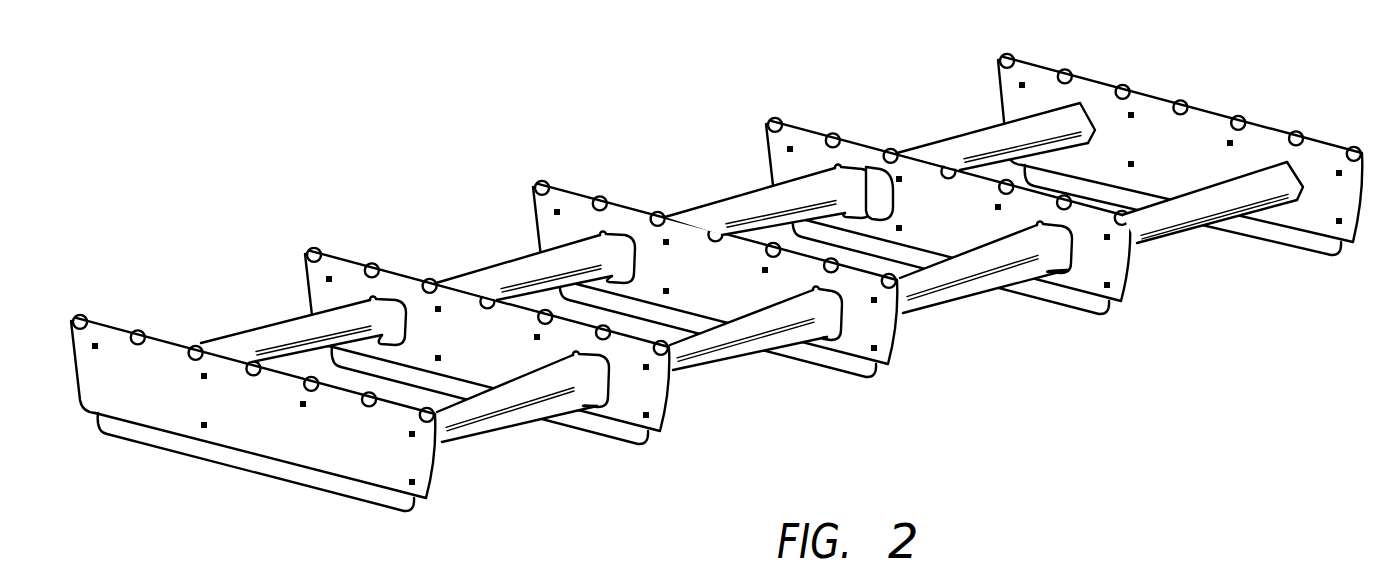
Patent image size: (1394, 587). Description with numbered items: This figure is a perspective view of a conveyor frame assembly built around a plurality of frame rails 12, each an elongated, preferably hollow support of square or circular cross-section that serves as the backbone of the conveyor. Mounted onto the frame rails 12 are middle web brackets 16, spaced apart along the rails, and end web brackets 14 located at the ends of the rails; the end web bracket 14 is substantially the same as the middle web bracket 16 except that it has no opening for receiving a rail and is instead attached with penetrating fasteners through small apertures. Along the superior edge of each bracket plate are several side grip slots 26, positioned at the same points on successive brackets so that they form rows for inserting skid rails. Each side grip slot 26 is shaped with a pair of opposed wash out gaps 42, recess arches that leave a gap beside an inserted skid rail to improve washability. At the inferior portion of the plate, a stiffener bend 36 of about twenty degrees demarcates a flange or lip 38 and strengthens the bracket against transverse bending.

The frame rail 12 is at (511, 426).
The end web bracket 14 is at (1333, 252).
The middle web bracket 16 is at (1124, 302).
The side grip slot 26 is at (662, 218).
The stiffener bend 36 is at (94, 412).
The flange or lip 38 is at (143, 436).
The wash out gap 42 is at (1063, 272).